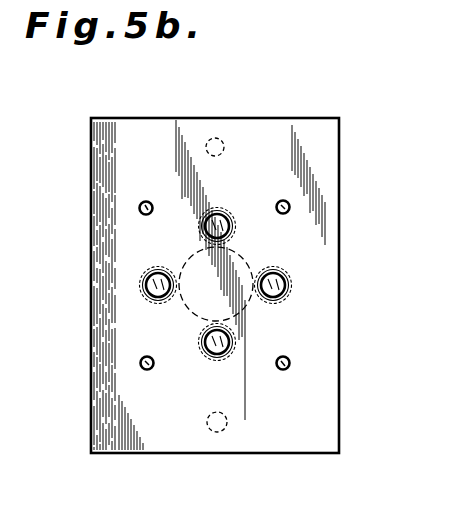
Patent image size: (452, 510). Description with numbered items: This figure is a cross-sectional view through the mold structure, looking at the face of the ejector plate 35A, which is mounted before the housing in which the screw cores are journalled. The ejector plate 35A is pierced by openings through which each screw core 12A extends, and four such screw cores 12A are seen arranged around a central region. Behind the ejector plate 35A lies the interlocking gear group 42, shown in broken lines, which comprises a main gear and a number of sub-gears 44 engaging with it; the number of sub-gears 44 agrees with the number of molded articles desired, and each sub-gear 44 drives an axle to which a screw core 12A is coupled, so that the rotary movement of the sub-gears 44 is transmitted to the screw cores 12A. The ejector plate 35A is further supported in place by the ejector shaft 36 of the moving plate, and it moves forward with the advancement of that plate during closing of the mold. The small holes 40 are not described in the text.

The ejector plate 35A is at (318, 163).
The ejector shaft 36 is at (221, 139).
The screw hole 40 is at (290, 207).
The interlocking gear group 42 is at (185, 303).
The screw core 12A is at (276, 280).
The sub-gears 44 is at (293, 297).